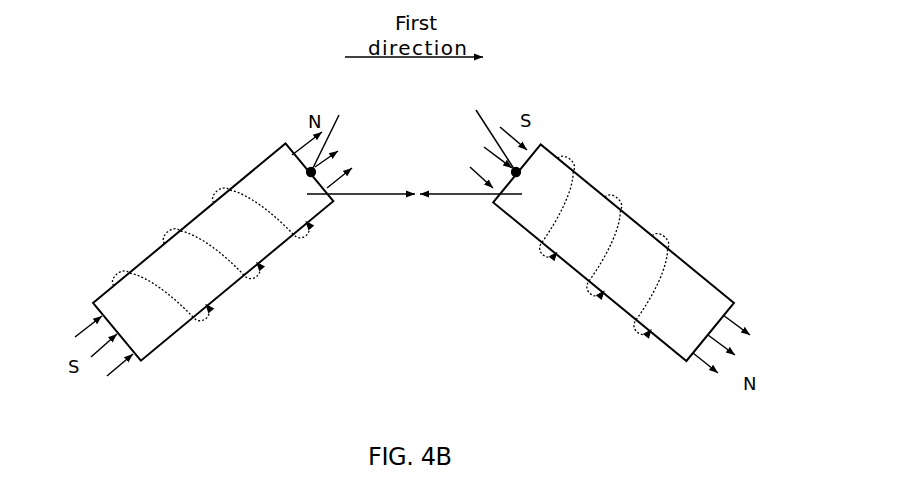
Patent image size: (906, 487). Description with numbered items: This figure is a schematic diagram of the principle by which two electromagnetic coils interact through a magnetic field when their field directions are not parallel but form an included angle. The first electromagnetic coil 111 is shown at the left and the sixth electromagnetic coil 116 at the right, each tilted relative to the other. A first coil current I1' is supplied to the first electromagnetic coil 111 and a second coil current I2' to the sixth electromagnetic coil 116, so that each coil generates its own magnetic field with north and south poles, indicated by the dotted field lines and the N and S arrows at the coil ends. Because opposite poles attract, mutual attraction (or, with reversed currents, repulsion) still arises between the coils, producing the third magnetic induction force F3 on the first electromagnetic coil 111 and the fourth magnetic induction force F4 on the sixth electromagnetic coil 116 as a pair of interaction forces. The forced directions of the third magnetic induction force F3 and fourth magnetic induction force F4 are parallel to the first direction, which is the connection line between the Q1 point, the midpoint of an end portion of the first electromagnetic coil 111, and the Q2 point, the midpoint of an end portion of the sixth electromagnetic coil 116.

The first electromagnetic coil 111 is at (213, 254).
The sixth electromagnetic coil 116 is at (610, 250).
The first coil current I1' is at (250, 193).
The second coil current I2' is at (630, 240).
The Q1 point Q1 is at (341, 141).
The Q2 point Q2 is at (483, 139).
The third magnetic induction force F3 is at (361, 211).
The fourth magnetic induction force F4 is at (471, 211).